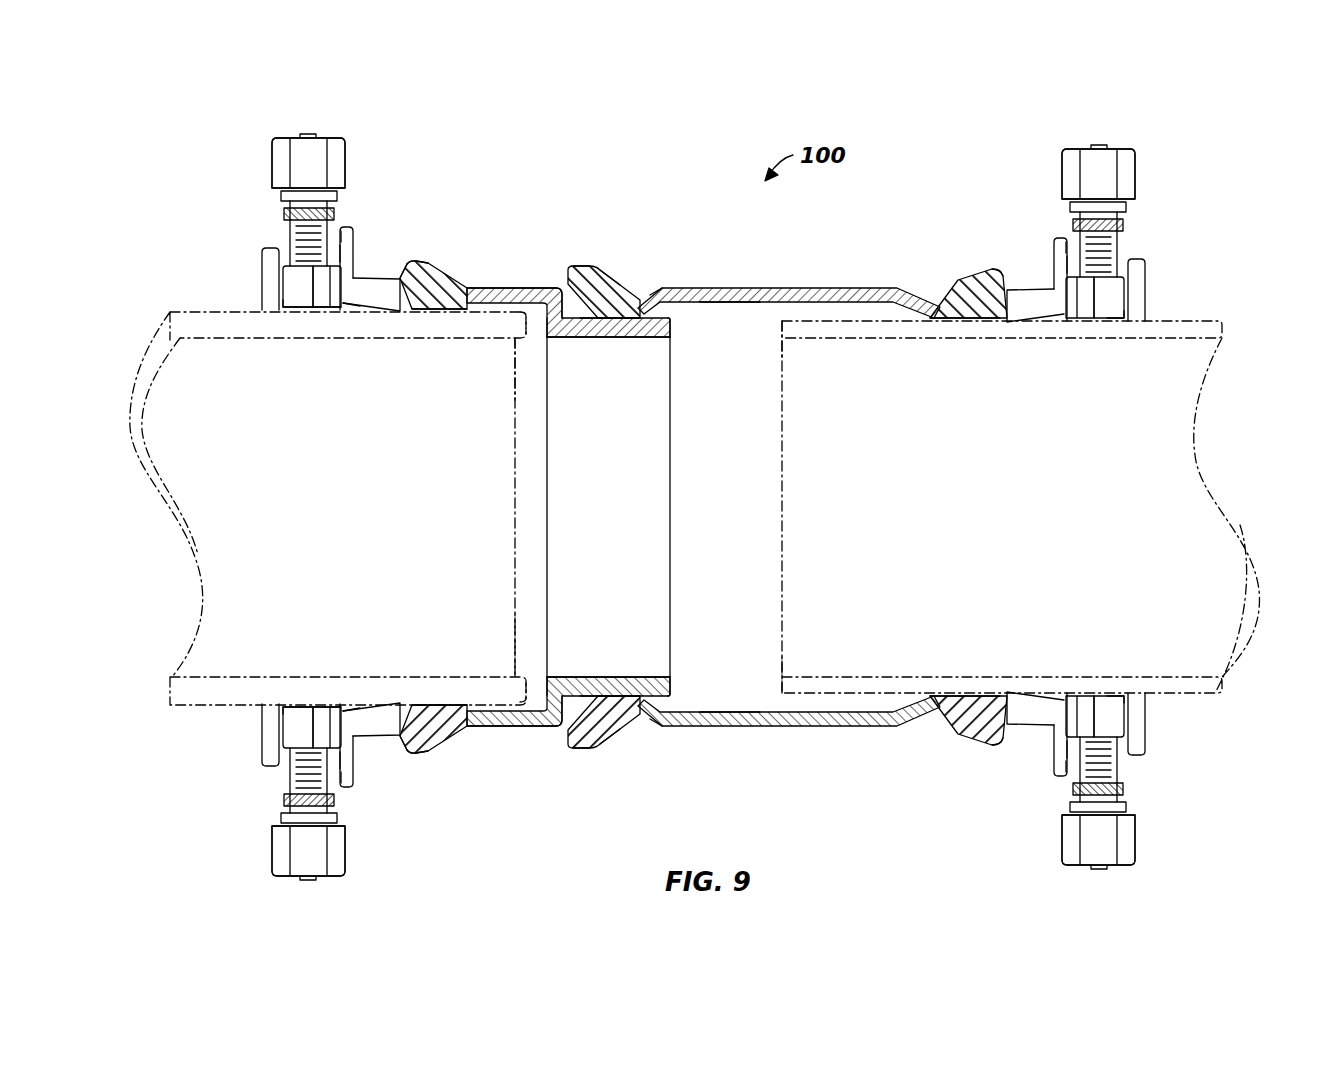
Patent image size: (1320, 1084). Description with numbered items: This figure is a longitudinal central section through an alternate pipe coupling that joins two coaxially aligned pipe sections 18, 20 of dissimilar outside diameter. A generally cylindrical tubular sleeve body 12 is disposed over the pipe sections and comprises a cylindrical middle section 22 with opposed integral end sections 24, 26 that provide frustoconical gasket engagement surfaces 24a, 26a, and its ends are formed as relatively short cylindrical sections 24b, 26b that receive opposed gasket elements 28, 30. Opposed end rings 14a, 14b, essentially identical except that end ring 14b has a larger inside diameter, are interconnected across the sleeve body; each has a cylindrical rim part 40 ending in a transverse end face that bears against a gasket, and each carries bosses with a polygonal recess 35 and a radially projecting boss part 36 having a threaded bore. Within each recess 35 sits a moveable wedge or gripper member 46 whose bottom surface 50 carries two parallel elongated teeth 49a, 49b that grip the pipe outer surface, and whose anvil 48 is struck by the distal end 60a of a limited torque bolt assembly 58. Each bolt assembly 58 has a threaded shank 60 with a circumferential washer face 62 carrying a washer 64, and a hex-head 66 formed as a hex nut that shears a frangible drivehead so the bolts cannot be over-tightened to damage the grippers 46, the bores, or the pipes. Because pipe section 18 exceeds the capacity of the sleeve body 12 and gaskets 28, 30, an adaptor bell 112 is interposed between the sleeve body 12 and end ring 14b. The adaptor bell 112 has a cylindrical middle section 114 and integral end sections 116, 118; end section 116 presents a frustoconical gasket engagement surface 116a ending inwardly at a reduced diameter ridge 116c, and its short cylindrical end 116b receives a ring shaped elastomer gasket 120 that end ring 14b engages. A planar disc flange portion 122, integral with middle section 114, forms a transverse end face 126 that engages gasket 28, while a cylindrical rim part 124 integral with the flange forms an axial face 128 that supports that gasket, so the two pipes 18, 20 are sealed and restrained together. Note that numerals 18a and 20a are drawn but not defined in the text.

The sleeve body 12 is at (775, 288).
The end ring 14a is at (1146, 300).
The end ring 14b is at (262, 290).
The pipe section 18 is at (185, 340).
The first pipe end 18a is at (517, 368).
The pipe section 20 is at (1215, 318).
The second pipe end 20a is at (780, 332).
The middle section 22 is at (740, 303).
The end section 24 is at (620, 283).
The frustoconical gasket engagement surface 24a is at (633, 335).
The cylindrical section 24b is at (580, 268).
The end section 26 is at (933, 293).
The frustoconical gasket engagement surface 26a is at (937, 315).
The cylindrical section 26b is at (978, 272).
The gasket element 28 is at (647, 287).
The gasket element 30 is at (982, 315).
The polygonal recess 35 is at (1100, 300).
The boss part 36 is at (1067, 240).
The cylindrical rim part 40 is at (1055, 288).
The gripper member 46 is at (1083, 300).
The anvil 48 is at (1068, 252).
The tooth 49a is at (343, 302).
The tooth 49b is at (325, 307).
The bottom surface 50 is at (335, 307).
The limited torque bolt assembly 58 is at (1066, 145).
The threaded shank portion 60 is at (1110, 252).
The distal end 60a is at (1107, 280).
The washer face portion 62 is at (1068, 205).
The washer 64 is at (1122, 223).
The limited torque hex-head 66 is at (1108, 151).
The adaptor bell 112 is at (497, 288).
The middle section 114 is at (513, 288).
The end section 116 is at (440, 277).
The frustoconical gasket engagement surface 116a is at (418, 298).
The cylindrical section 116b is at (423, 262).
The radially inward projection ridge 116c is at (526, 334).
The end section 118 is at (607, 348).
The gasket 120 is at (412, 310).
The flange portion 122 is at (557, 340).
The cylindrical rim part 124 is at (672, 334).
The transverse end face 126 is at (593, 270).
The axial face 128 is at (590, 338).